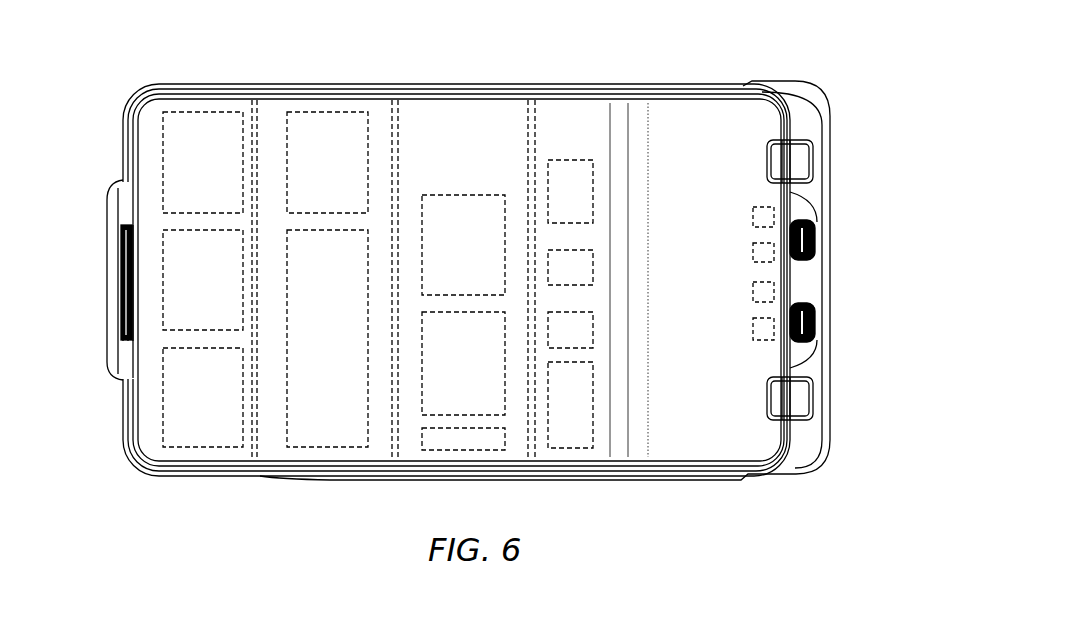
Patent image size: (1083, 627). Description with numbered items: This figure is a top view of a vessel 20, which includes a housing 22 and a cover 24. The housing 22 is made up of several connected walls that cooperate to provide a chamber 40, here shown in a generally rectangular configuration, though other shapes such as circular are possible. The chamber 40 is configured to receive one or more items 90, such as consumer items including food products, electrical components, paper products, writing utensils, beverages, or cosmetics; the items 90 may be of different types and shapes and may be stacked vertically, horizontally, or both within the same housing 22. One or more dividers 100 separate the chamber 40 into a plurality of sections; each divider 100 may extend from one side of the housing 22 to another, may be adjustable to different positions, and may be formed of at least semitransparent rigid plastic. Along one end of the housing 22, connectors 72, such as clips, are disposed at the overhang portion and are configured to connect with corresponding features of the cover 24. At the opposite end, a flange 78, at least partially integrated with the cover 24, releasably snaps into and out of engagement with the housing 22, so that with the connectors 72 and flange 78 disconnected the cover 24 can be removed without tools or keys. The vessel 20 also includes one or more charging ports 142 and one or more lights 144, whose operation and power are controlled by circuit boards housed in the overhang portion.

The vessel 20 is at (791, 47).
The housing 22 is at (797, 440).
The cover 24 is at (705, 435).
The chamber 40 is at (463, 113).
The connectors 72 is at (813, 162).
The flange 78 is at (126, 378).
The items 90 is at (163, 358).
The dividers 100 is at (262, 112).
The charging ports 142 is at (818, 325).
The lights 144 is at (745, 205).